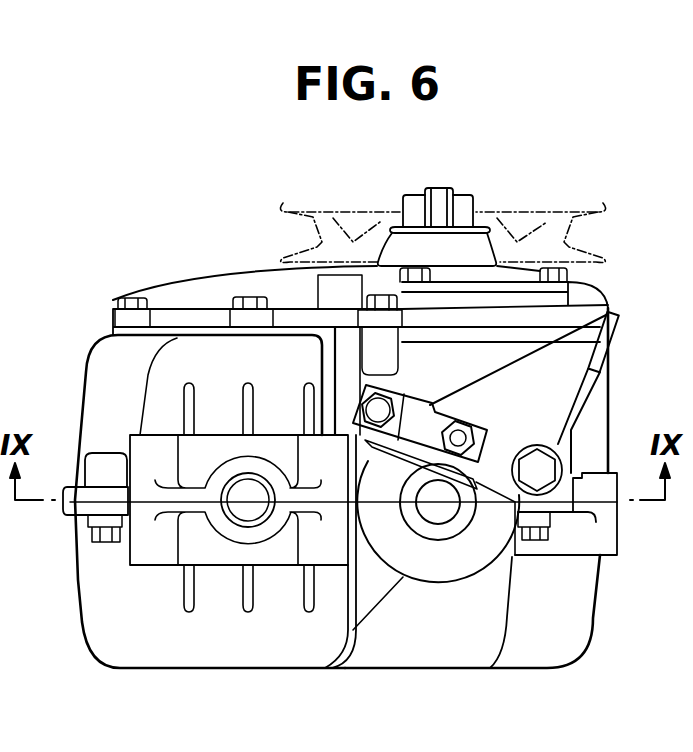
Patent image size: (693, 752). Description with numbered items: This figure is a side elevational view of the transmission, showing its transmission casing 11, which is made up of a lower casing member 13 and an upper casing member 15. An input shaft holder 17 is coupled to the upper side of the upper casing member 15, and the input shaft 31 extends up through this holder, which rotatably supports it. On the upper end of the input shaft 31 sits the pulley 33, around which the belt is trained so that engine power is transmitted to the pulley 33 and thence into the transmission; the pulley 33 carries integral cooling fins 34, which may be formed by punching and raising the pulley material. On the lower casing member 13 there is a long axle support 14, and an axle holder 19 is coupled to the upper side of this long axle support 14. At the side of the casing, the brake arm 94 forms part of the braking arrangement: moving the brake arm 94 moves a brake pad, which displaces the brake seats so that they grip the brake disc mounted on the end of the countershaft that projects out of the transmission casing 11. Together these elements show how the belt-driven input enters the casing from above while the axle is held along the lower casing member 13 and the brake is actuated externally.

The transmission casing 11 is at (108, 602).
The lower casing member 13 is at (555, 630).
The long axle support 14 is at (224, 552).
The upper casing member 15 is at (593, 428).
The input shaft holder 17 is at (234, 287).
The axle holder 19 is at (225, 447).
The input shaft 31 is at (437, 186).
The pulley 33 is at (596, 212).
The cooling fins 34 is at (350, 226).
The brake arm 94 is at (574, 345).